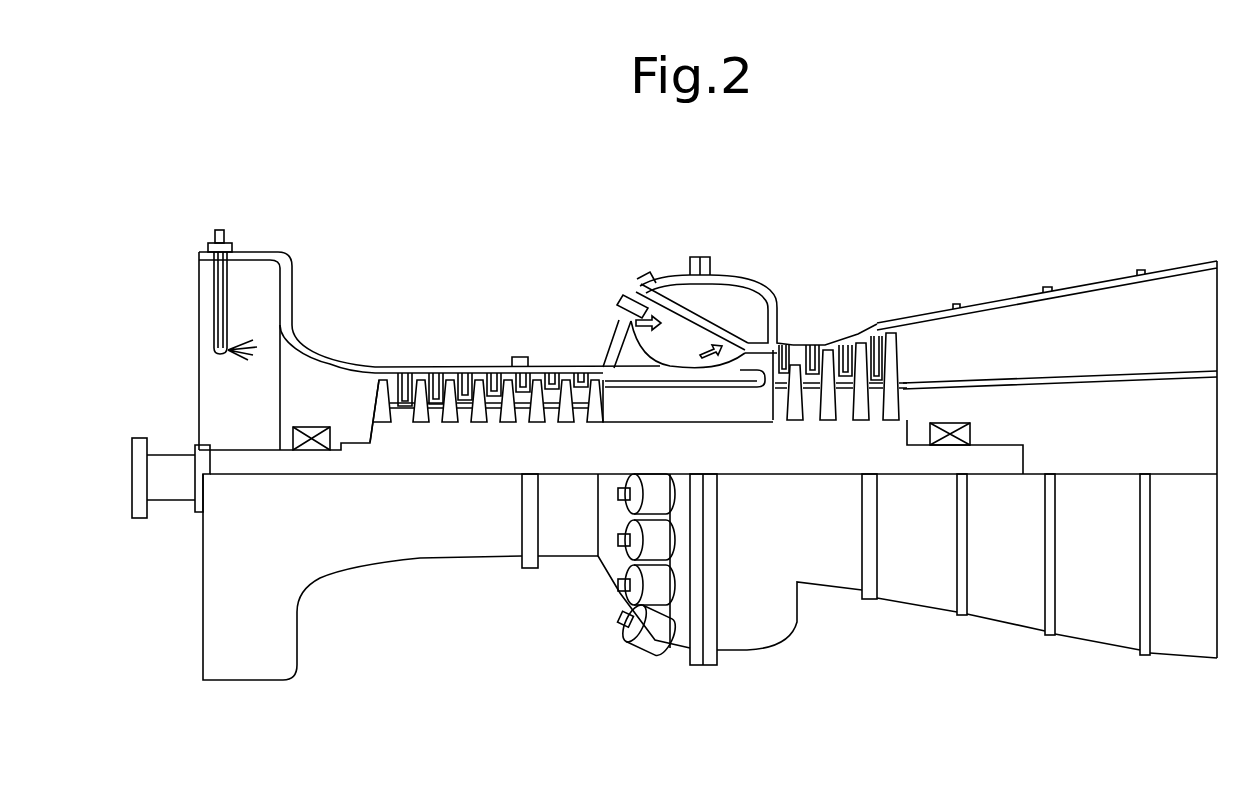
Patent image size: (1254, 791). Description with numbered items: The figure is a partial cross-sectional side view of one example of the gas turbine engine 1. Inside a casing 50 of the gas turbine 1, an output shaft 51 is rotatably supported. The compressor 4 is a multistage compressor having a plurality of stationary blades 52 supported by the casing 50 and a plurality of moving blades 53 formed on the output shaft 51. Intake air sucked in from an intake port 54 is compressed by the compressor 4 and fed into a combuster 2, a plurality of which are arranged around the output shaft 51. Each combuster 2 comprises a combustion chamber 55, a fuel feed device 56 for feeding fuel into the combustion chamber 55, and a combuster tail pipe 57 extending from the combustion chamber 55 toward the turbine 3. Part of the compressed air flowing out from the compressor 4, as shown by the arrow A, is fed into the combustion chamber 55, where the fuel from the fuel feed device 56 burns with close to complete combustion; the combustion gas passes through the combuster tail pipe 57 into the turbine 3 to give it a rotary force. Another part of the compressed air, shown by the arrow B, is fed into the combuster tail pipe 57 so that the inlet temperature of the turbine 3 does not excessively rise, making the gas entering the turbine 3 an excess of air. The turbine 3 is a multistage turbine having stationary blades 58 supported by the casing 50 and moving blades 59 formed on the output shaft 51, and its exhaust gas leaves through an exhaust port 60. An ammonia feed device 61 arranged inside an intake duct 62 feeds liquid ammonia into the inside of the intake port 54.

The gas turbine engine 1 is at (822, 218).
The combuster 2 is at (672, 297).
The turbine 3 is at (833, 323).
The compressor 4 is at (506, 357).
The casing 50 is at (763, 285).
The output shaft 51 is at (240, 460).
The stationary blades 52 is at (398, 372).
The moving blades 53 is at (423, 372).
The intake port 54 is at (296, 392).
The combustion chamber 55 is at (680, 313).
The fuel feed device 56 is at (623, 297).
The combuster tail pipe 57 is at (728, 345).
The stationary blades 58 is at (795, 362).
The moving blades 59 is at (848, 363).
The exhaust port 60 is at (1170, 295).
The ammonia feed device 61 is at (216, 231).
The intake duct 62 is at (255, 257).
The arrow A is at (622, 343).
The arrow B is at (694, 350).